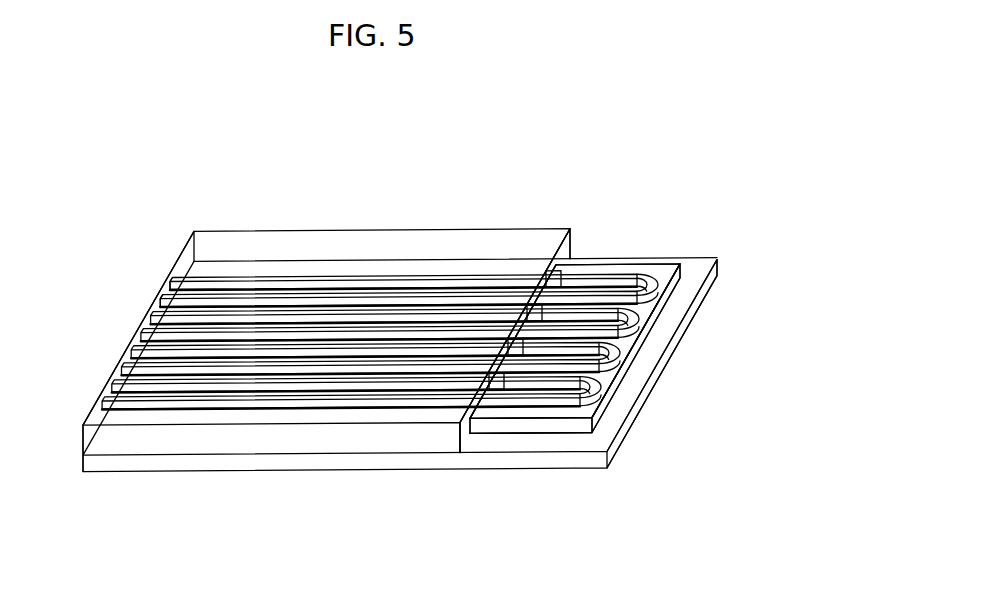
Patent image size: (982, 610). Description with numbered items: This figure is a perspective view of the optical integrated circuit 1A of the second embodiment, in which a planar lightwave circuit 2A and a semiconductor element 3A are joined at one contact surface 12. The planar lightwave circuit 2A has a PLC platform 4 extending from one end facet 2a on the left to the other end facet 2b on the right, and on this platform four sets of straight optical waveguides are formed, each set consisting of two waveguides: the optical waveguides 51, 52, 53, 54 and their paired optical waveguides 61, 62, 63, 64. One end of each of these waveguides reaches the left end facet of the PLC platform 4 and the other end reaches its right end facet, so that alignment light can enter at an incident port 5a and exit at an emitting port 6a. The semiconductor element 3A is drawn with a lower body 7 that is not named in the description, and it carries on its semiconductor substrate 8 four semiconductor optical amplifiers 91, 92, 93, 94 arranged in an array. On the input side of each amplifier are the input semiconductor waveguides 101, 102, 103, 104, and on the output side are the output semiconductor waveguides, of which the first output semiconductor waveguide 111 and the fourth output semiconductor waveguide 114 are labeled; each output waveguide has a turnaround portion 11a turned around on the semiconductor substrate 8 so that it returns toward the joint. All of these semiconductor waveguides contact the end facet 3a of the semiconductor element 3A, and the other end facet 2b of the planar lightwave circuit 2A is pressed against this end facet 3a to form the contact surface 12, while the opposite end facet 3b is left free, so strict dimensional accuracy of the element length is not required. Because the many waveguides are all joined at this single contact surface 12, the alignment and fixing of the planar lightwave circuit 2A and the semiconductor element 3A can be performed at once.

The optical integrated circuit 1A is at (438, 197).
The planar lightwave circuit 2A is at (177, 482).
The one end facet 2a is at (83, 447).
The other end facet 2b is at (571, 262).
The semiconductor element 3A is at (607, 262).
The end facet 3a is at (458, 428).
The end facet 3b is at (668, 350).
The PLC platform 4 is at (118, 470).
The optical waveguide 51 is at (287, 283).
The optical waveguide 52 is at (178, 321).
The optical waveguide 53 is at (263, 350).
The optical waveguide 54 is at (360, 381).
The incident port 5a is at (165, 282).
The optical waveguide 61 is at (237, 303).
The optical waveguide 62 is at (170, 338).
The optical waveguide 63 is at (222, 368).
The optical waveguide 64 is at (300, 398).
The emitting port 6a is at (153, 303).
The second substrate 7 is at (618, 470).
The semiconductor substrate 8 is at (662, 341).
The semiconductor optical amplifier 91 is at (645, 262).
The semiconductor optical amplifier 92 is at (628, 322).
The semiconductor optical amplifier 93 is at (609, 356).
The semiconductor optical amplifier 94 is at (596, 388).
The input semiconductor waveguide 101 is at (553, 272).
The input semiconductor waveguide 102 is at (534, 313).
The input semiconductor waveguide 103 is at (515, 347).
The input semiconductor waveguide 104 is at (497, 393).
The output semiconductor waveguide 111 is at (680, 268).
The output semiconductor waveguide 114 is at (524, 440).
The turnaround portion 11a is at (688, 305).
The contact surface 12 is at (468, 471).